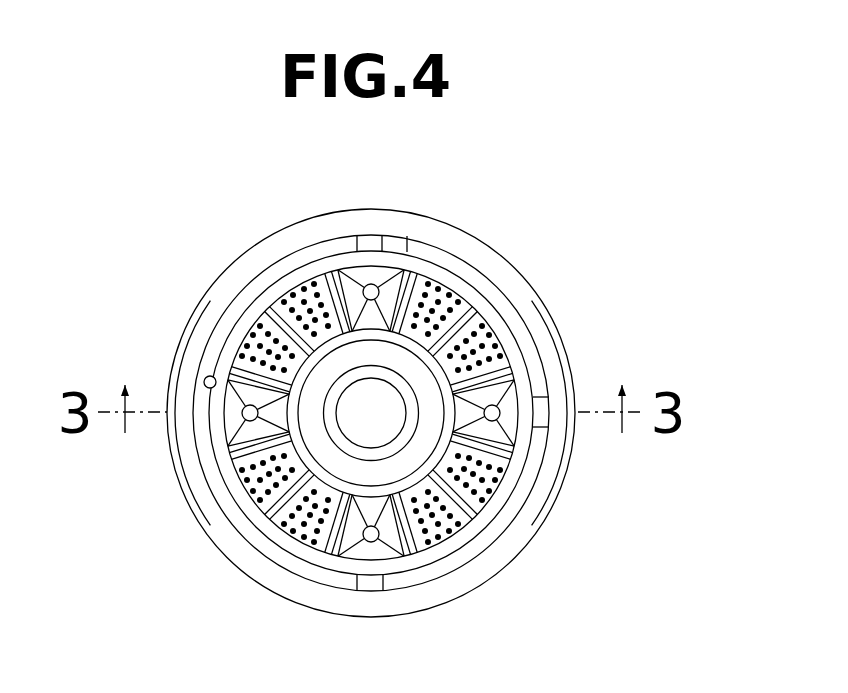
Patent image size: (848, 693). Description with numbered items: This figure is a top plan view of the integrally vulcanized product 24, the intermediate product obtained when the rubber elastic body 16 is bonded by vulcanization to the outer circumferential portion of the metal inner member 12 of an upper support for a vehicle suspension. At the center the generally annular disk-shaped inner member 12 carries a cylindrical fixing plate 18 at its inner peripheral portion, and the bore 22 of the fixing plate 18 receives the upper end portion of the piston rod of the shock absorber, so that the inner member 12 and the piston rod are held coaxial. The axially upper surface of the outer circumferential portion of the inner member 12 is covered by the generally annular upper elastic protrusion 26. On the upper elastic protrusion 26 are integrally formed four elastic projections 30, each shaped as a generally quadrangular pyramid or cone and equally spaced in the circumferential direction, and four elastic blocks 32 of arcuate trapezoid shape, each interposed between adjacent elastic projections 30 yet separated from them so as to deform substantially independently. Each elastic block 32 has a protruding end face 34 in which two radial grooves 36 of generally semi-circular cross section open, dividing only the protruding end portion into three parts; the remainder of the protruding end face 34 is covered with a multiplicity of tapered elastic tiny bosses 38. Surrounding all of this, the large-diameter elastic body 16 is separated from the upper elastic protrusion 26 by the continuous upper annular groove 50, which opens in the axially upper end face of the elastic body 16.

The inner member 12 is at (313, 372).
The elastic body 16 is at (170, 345).
The fixing plate 18 is at (410, 418).
The bore 22 is at (392, 393).
The integrally vulcanized product 24 is at (607, 245).
The upper elastic protrusion 26 is at (404, 252).
The elastic projections 30 is at (333, 255).
The elastic blocks 32 is at (227, 333).
The protruding end face 34 is at (330, 280).
The radial grooves 36 is at (298, 302).
The elastic tiny bosses 38 is at (300, 540).
The upper annular groove 50 is at (205, 380).